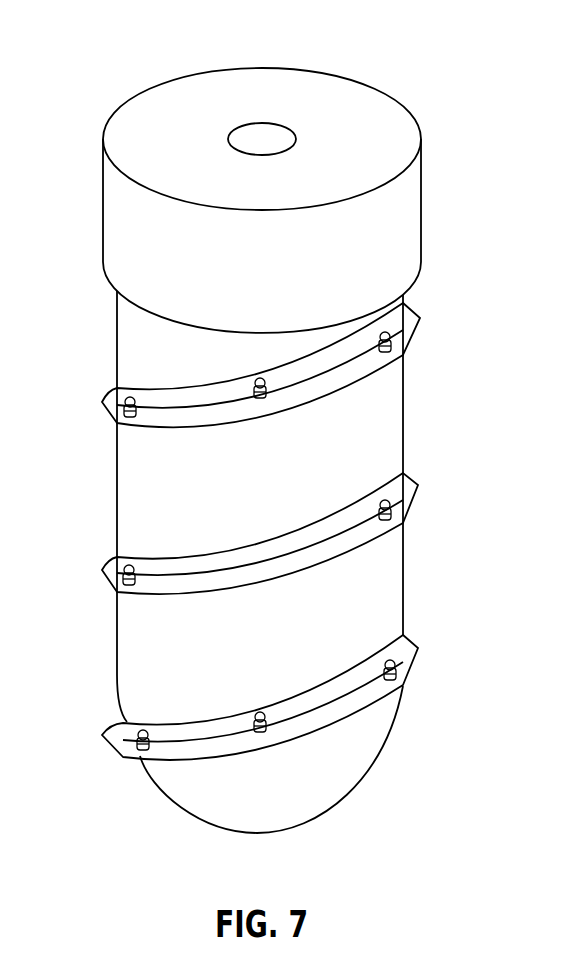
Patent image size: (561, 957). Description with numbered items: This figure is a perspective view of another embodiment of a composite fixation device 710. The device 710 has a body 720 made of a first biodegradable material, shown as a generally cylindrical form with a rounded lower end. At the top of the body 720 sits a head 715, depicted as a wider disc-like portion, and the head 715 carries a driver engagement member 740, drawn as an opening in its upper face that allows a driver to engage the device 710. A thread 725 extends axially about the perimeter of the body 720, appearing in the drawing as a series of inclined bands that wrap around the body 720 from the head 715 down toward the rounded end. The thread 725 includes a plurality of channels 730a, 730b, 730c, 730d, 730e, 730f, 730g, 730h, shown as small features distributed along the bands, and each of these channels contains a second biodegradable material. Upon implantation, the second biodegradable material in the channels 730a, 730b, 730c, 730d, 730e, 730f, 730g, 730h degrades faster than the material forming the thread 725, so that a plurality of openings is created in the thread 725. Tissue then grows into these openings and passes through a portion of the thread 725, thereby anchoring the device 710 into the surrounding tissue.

The composite fixation device 710 is at (131, 67).
The head 715 is at (422, 211).
The body 720 is at (403, 420).
The thread 725 is at (425, 318).
The channel 730a is at (390, 338).
The channel 730b is at (268, 384).
The channel 730c is at (122, 406).
The channel 730d is at (390, 504).
The channel 730e is at (122, 576).
The channel 730f is at (135, 738).
The channel 730g is at (268, 718).
The channel 730h is at (394, 665).
The driver engagement member 740 is at (290, 130).